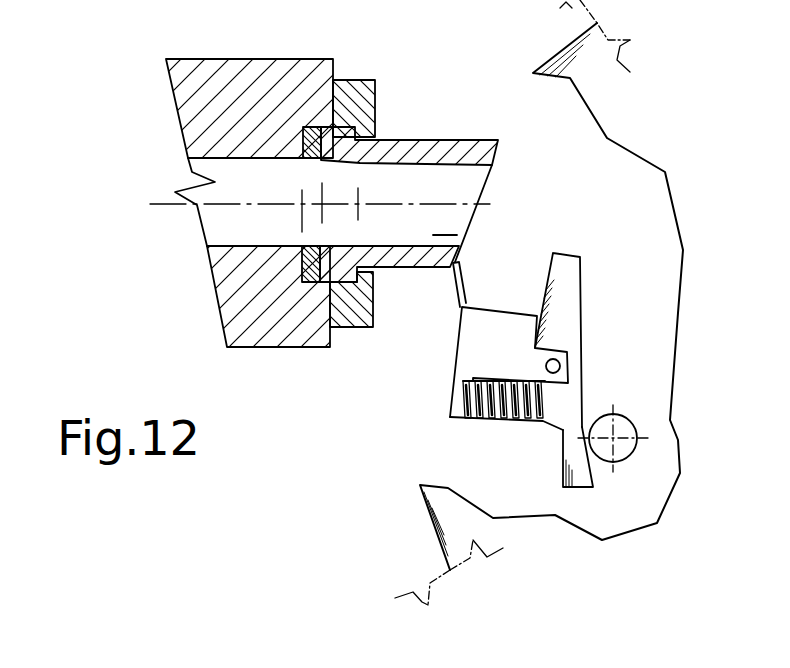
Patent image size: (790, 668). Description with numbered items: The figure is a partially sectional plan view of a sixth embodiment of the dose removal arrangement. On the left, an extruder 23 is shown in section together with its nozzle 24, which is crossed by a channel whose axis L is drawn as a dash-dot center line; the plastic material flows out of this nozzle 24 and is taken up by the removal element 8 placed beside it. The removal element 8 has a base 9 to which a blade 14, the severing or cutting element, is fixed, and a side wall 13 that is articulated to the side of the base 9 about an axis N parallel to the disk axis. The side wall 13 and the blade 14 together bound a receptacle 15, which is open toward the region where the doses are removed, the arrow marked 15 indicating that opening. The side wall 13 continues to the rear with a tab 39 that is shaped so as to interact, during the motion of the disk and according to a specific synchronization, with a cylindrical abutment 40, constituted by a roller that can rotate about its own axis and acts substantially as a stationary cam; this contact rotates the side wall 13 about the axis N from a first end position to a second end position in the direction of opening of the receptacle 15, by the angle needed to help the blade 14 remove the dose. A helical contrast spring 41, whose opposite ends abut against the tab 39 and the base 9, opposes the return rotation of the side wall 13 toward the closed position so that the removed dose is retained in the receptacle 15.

The extruder 23 is at (248, 82).
The nozzle 24 is at (425, 150).
The receptacle 15 is at (506, 284).
The side wall 13 is at (567, 283).
The axis N is at (561, 366).
The blade 14 is at (452, 273).
The base 9 is at (468, 340).
The removal element 8 is at (422, 401).
The cylindrical abutment 40 is at (623, 428).
The tab 39 is at (575, 448).
The helical contrast spring 41 is at (502, 420).
The axis L is at (165, 206).